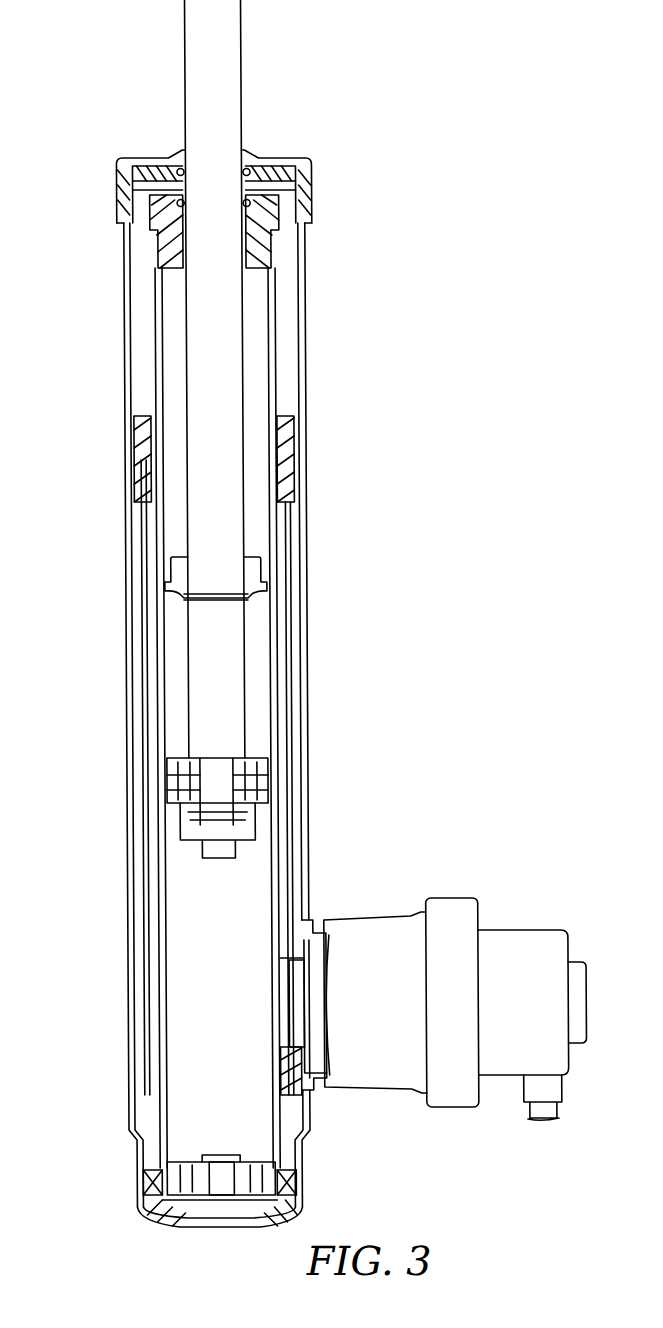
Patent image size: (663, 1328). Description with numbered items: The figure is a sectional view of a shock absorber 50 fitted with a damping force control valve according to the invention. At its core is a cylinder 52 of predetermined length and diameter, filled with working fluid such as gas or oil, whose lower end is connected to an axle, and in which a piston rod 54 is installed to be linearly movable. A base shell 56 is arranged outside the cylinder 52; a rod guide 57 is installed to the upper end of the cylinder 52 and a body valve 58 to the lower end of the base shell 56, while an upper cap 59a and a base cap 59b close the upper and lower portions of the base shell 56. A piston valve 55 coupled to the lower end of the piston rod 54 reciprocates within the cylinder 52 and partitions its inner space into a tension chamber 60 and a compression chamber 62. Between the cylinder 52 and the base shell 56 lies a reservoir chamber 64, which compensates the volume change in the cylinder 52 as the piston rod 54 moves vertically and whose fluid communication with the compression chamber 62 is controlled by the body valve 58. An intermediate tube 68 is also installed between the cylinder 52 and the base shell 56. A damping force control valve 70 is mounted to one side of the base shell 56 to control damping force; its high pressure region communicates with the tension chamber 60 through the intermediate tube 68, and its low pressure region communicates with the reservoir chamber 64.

The shock absorber 50 is at (324, 624).
The cylinder 52 is at (157, 861).
The piston rod 54 is at (196, 671).
The piston valve 55 is at (171, 785).
The base shell 56 is at (129, 383).
The rod guide 57 is at (161, 246).
The body valve 58 is at (144, 1210).
The upper cap 59a is at (123, 190).
The base cap 59b is at (175, 1222).
The tension chamber 60 is at (260, 346).
The compression chamber 62 is at (287, 899).
The reservoir chamber 64 is at (293, 285).
The intermediate tube 68 is at (305, 794).
The damping force control valve 70 is at (518, 906).